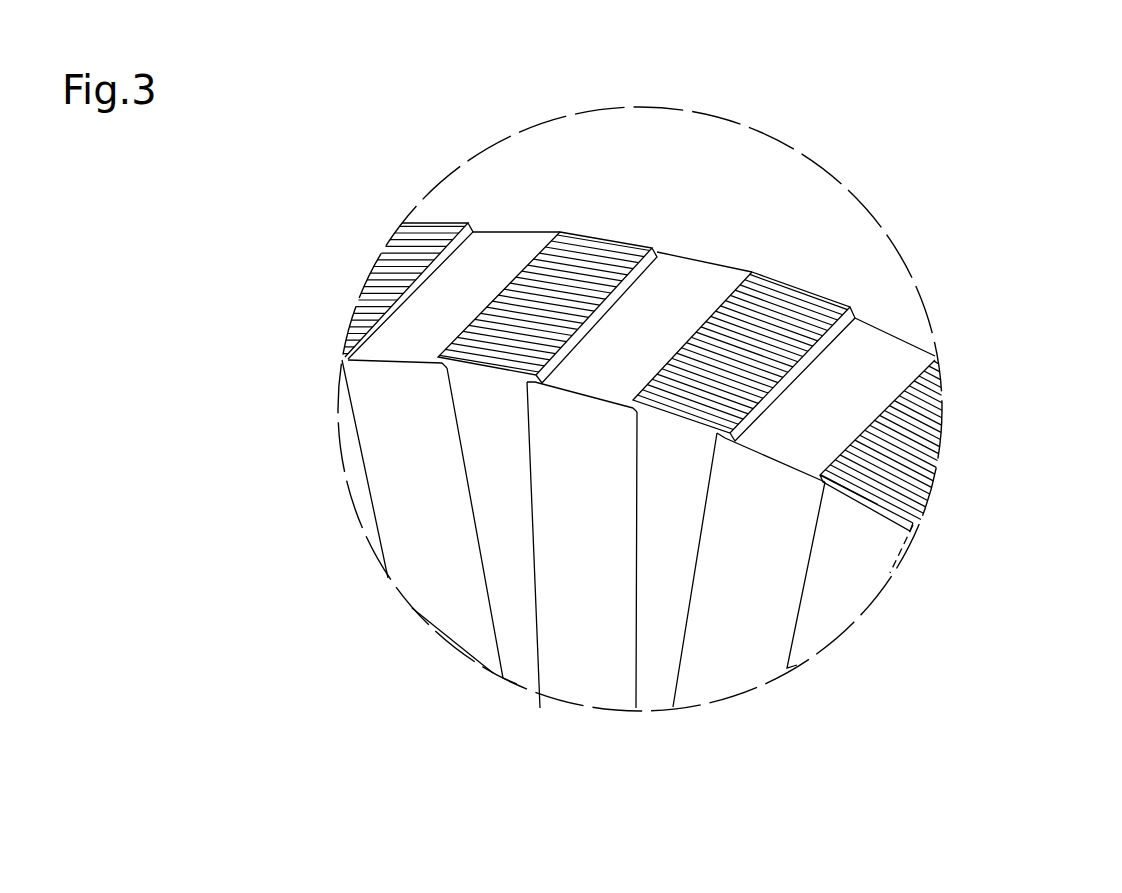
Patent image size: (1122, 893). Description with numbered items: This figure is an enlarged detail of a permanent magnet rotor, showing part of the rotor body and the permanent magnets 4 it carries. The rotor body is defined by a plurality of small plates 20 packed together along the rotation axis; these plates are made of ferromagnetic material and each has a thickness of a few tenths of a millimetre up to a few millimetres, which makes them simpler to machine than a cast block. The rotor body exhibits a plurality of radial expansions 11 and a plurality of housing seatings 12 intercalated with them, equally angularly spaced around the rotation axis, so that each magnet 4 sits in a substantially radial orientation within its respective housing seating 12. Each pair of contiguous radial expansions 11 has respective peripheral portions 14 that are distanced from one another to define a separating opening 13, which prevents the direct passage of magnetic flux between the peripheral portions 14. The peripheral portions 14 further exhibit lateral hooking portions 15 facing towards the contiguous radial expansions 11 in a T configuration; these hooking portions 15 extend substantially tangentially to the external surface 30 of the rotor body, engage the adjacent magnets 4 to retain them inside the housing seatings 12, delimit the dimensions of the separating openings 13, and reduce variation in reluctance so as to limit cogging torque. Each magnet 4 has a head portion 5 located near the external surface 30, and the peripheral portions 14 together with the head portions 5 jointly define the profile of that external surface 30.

The permanent magnet 4 is at (740, 613).
The head portion 5 is at (400, 397).
The radial expansion 11 is at (510, 567).
The housing seating 12 is at (423, 530).
The separating opening 13 is at (697, 297).
The peripheral portion 14 is at (493, 412).
The lateral hooking portion 15 is at (520, 272).
The small plate 20 is at (593, 257).
The external surface 30 is at (820, 253).